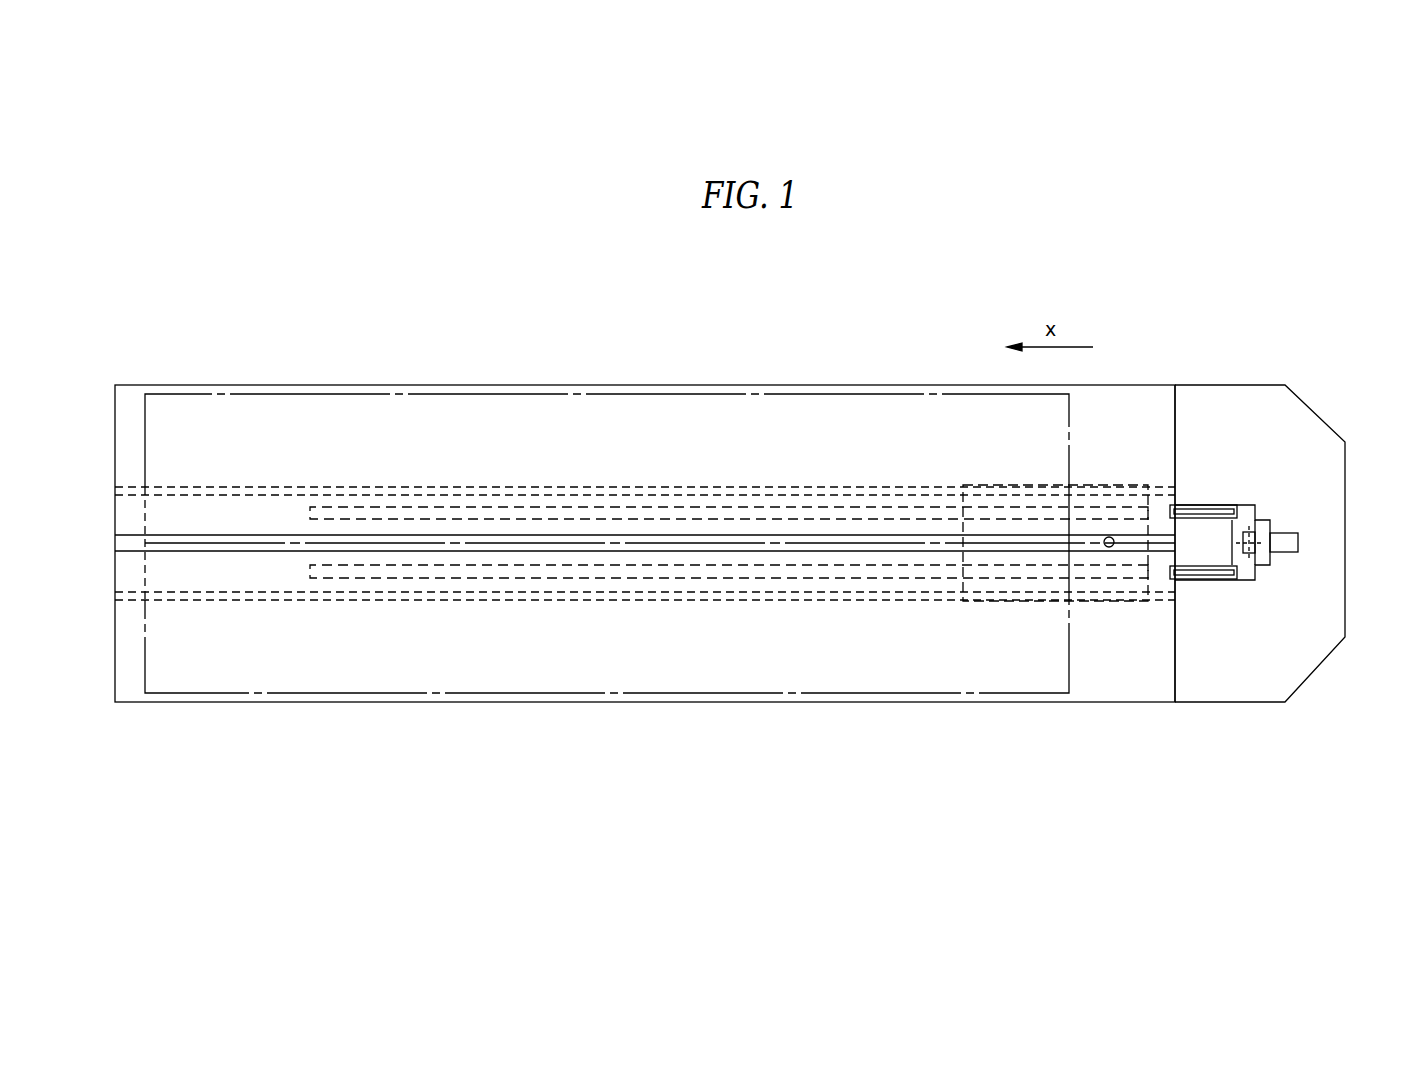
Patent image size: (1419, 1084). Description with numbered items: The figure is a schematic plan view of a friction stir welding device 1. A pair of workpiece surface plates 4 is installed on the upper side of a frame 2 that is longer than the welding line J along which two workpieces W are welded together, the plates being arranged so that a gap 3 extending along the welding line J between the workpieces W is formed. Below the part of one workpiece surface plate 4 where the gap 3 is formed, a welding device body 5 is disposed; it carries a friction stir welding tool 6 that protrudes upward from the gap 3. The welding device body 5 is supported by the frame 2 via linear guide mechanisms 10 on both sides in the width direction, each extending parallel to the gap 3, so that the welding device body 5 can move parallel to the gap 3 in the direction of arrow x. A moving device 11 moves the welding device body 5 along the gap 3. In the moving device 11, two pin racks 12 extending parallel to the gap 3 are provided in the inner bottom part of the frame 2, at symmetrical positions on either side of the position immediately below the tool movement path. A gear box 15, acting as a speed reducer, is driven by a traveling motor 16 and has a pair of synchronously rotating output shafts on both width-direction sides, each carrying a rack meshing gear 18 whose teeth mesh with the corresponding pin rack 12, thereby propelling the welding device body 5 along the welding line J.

The friction stir welding device 1 is at (790, 342).
The frame 2 is at (1252, 394).
The gap 3 is at (568, 543).
The workpiece surface plate 4 is at (388, 385).
The welding device body 5 is at (1082, 492).
The friction stir welding tool 6 is at (1110, 547).
The linear guide mechanism 10 is at (865, 487).
The moving device 11 is at (1265, 508).
The pin rack 12 is at (650, 507).
The gear box 15 is at (1225, 557).
The traveling motor 16 is at (1298, 543).
The rack meshing gear 18 is at (1222, 505).
The welding line J is at (215, 543).
The workpiece W is at (495, 394).